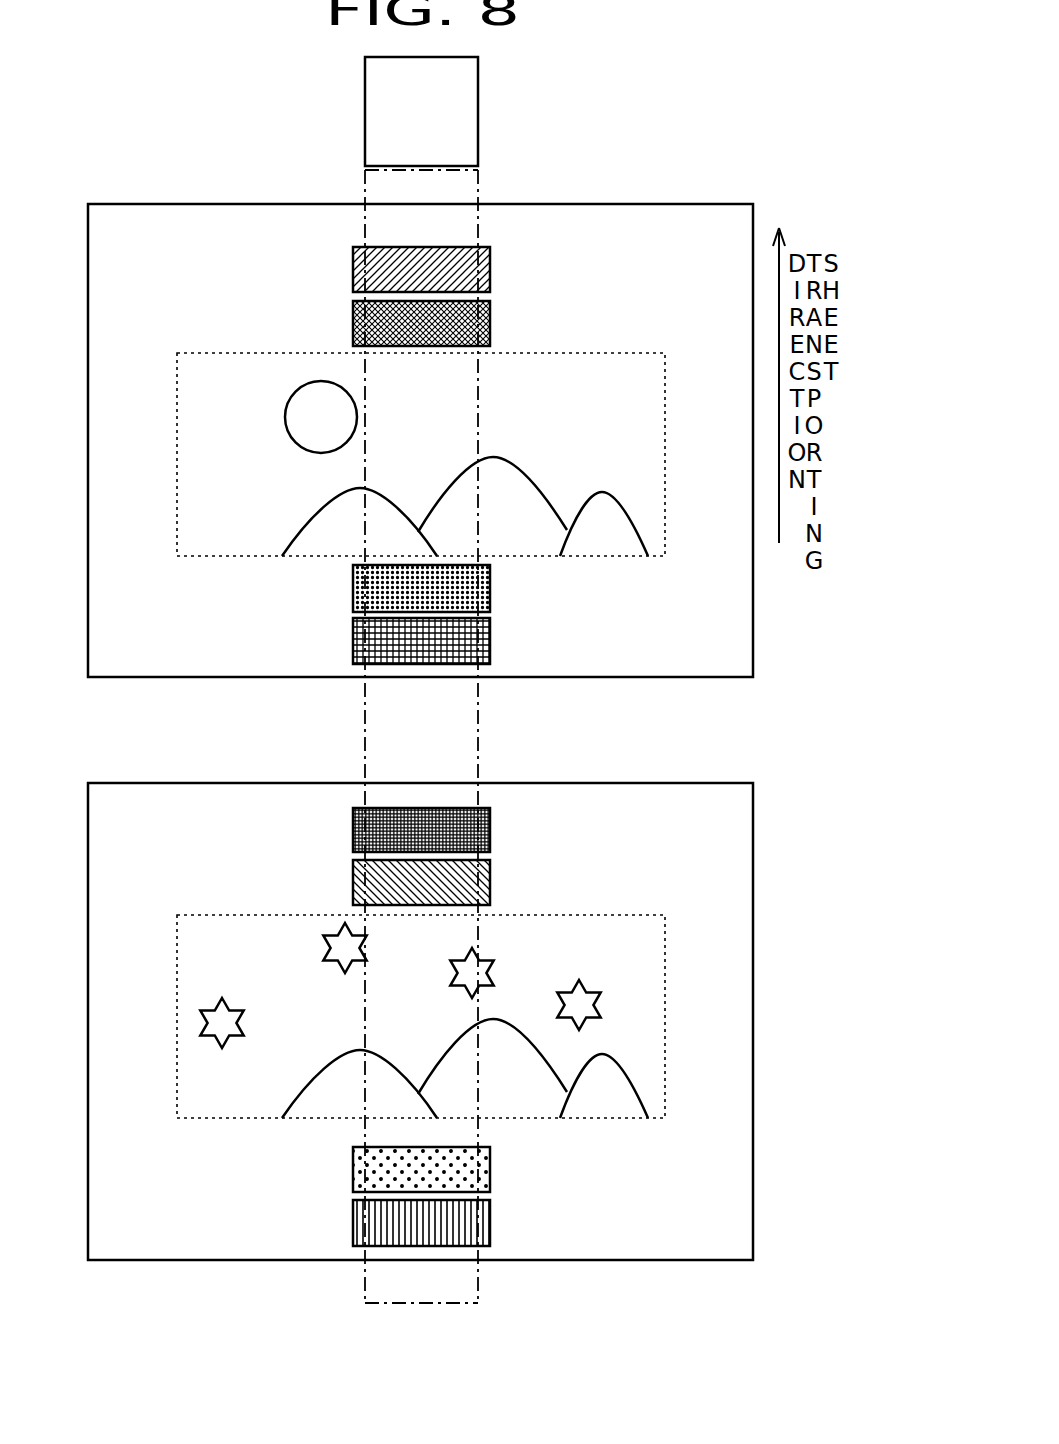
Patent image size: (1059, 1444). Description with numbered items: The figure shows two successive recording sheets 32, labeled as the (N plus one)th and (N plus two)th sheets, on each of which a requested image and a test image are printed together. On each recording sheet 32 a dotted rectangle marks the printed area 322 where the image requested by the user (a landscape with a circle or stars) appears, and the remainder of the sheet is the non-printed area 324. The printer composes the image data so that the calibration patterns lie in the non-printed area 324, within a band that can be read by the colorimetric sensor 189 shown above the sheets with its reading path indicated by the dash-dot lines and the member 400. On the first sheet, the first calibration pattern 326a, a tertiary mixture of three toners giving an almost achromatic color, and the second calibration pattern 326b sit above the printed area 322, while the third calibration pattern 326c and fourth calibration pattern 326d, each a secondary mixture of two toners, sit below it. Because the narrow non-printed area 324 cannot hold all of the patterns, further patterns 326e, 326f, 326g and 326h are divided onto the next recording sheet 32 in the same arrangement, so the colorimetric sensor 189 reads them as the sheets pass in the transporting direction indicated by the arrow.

The colorimetric sensor 189 is at (421, 111).
The guide member 400 is at (478, 182).
The recording sheet 32 is at (180, 678).
The printed area 322 is at (542, 543).
The non-printed area 324 is at (550, 663).
The first calibration pattern 326a is at (353, 269).
The second calibration pattern 326b is at (353, 322).
The third calibration pattern 326c is at (353, 588).
The fourth calibration pattern 326d is at (353, 641).
The color patch 326e is at (353, 830).
The color patch 326f is at (353, 882).
The color patch 326g is at (353, 1165).
The color patch 326h is at (353, 1221).